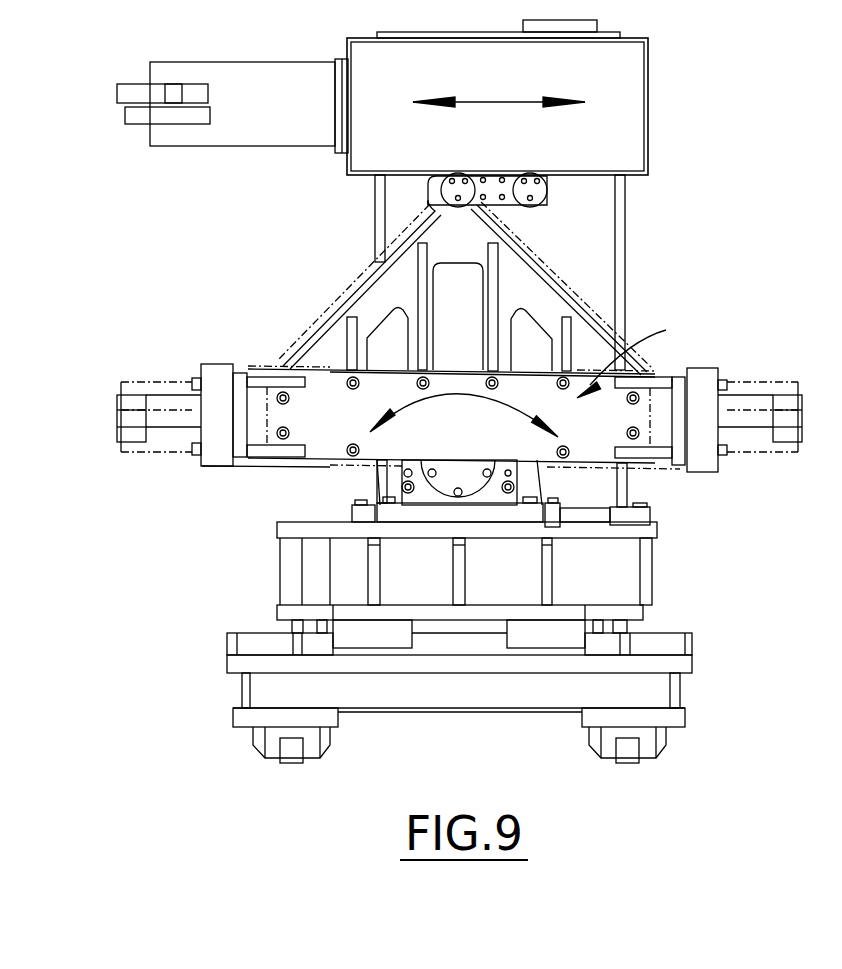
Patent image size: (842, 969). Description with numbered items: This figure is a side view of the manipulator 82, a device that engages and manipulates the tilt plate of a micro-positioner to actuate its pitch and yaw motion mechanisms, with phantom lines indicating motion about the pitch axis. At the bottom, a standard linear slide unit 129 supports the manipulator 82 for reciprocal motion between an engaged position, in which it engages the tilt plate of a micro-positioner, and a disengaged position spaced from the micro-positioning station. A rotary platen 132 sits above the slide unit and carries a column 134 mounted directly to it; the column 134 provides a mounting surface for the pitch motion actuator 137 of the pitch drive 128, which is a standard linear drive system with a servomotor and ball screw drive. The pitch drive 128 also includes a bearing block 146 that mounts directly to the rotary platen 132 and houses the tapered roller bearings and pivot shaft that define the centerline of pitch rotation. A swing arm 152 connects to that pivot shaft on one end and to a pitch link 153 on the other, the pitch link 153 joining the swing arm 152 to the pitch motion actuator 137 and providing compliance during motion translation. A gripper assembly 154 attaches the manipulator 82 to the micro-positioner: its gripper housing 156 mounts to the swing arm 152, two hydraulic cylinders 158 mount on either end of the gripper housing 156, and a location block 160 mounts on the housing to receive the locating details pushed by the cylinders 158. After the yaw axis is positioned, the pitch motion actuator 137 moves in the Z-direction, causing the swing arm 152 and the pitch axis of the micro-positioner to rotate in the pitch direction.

The pitch drive 128 is at (655, 41).
The pitch motion actuator 137 is at (632, 110).
The manipulator 82 is at (632, 202).
The column 134 is at (600, 278).
The pitch link 153 is at (440, 198).
The swing arm 152 is at (517, 266).
The gripper assembly 154 is at (645, 358).
The gripper housing 156 is at (240, 372).
The hydraulic cylinders 158 is at (185, 422).
The location block 160 is at (353, 405).
The bearing block 146 is at (403, 493).
The rotary platen 132 is at (587, 607).
The linear slide unit 129 is at (645, 692).